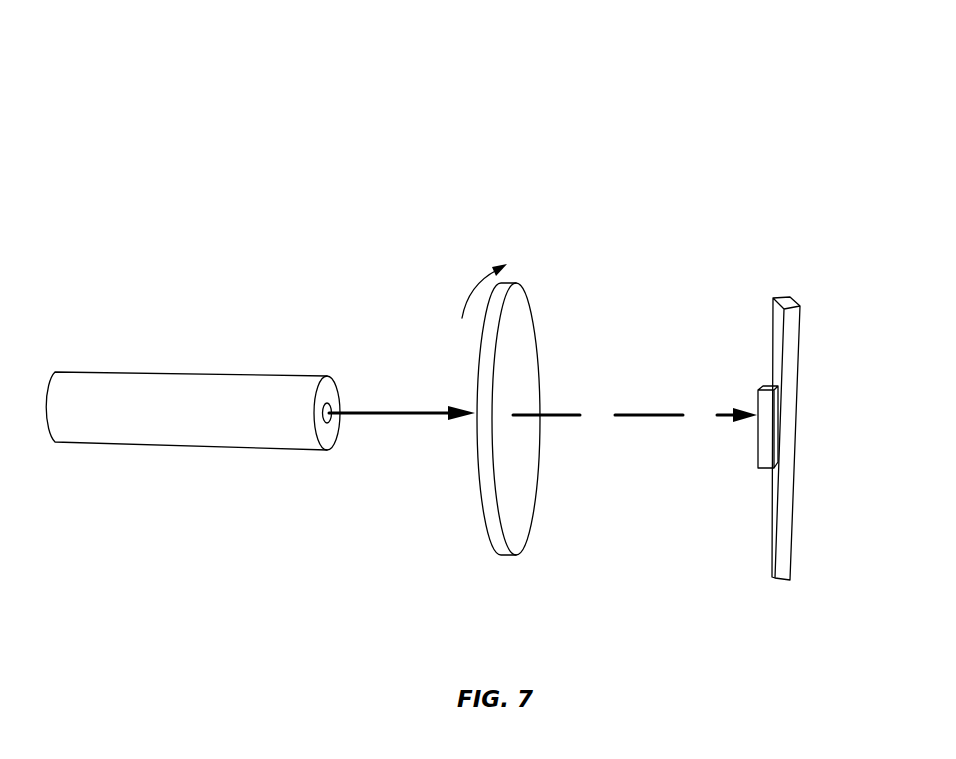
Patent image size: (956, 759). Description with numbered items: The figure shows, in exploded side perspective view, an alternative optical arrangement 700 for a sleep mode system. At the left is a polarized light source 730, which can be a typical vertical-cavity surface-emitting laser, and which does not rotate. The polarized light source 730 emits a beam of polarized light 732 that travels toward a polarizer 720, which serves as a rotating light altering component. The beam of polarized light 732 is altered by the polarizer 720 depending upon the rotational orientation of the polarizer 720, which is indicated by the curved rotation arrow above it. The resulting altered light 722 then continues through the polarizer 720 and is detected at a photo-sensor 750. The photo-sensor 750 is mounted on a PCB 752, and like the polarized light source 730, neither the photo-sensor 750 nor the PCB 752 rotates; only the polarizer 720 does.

The optical arrangement 700 is at (688, 58).
The polarized light source 730 is at (197, 447).
The beam of polarized light 732 is at (382, 417).
The polarizer 720 is at (503, 557).
The altered light 722 is at (580, 417).
The photo-sensor 750 is at (780, 440).
The PCB 752 is at (785, 583).